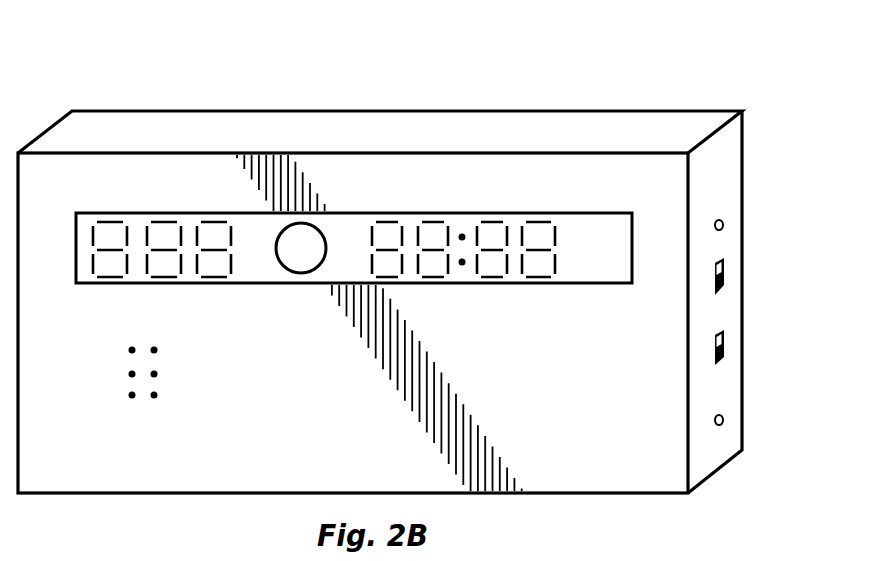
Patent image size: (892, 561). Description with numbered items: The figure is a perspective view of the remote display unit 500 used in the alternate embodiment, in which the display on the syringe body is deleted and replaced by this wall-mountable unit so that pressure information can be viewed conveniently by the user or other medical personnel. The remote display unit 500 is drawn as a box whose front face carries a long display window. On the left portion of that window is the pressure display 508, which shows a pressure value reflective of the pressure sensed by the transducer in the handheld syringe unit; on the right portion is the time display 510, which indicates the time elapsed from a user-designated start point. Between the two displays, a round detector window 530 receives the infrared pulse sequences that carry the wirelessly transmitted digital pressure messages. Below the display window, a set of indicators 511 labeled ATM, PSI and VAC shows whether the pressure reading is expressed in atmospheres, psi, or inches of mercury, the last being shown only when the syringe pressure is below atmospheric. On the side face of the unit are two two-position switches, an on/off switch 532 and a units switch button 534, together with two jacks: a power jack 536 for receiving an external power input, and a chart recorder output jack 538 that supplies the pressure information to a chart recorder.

The remote display unit 500 is at (336, 92).
The pressure display 508 is at (82, 203).
The time display 510 is at (372, 203).
The set of indicators 511 is at (118, 338).
The detector window 530 is at (301, 274).
The on/off switch 532 is at (724, 280).
The units switch button 534 is at (724, 352).
The power jack 536 is at (723, 225).
The chart recorder output jack 538 is at (723, 420).